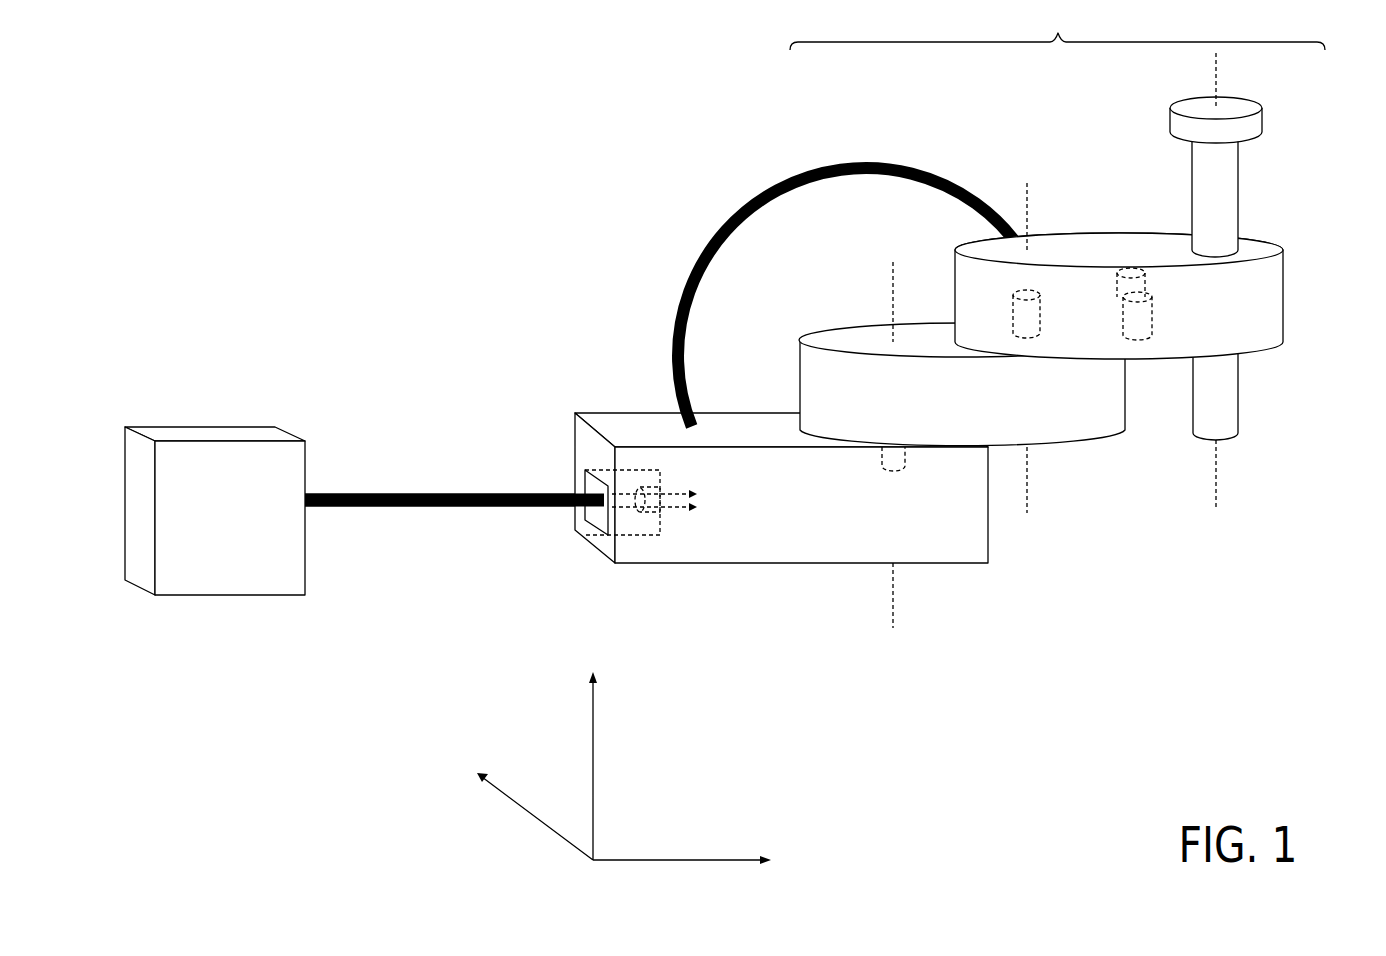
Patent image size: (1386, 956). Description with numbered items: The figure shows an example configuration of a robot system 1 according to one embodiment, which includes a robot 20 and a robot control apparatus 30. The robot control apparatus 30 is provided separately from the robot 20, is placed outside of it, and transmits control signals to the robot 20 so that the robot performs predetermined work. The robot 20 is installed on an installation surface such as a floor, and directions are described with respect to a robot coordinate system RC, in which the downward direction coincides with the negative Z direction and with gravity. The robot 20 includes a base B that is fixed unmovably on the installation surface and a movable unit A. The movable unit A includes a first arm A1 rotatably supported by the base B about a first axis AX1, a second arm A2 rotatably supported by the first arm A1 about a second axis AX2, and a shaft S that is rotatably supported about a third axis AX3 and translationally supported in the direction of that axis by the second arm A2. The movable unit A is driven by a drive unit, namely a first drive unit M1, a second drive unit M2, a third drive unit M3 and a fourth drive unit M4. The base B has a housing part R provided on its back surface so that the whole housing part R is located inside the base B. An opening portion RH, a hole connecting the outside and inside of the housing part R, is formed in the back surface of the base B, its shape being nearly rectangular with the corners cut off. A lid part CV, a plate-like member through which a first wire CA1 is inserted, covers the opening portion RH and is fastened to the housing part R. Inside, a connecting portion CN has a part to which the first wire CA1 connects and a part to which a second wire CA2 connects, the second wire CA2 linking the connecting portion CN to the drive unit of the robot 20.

The robot system 1 is at (358, 268).
The robot 20 is at (727, 117).
The robot control apparatus 30 is at (226, 427).
The movable unit A is at (1057, 25).
The first arm A1 is at (830, 330).
The second arm A2 is at (972, 243).
The first axis AX1 is at (896, 620).
The second axis AX2 is at (1030, 495).
The third axis AX3 is at (1220, 485).
The base B is at (574, 437).
The first wire CA1 is at (386, 493).
The second wire CA2 is at (668, 512).
The connecting portion CN is at (655, 490).
The lid part CV is at (456, 517).
The opening portion RH is at (600, 518).
The first drive unit M1 is at (880, 462).
The second drive unit M2 is at (1012, 308).
The third drive unit M3 is at (1115, 284).
The fourth drive unit M4 is at (1155, 316).
The housing part R is at (640, 537).
The robot coordinate system RC is at (618, 836).
The shaft S is at (1096, 268).